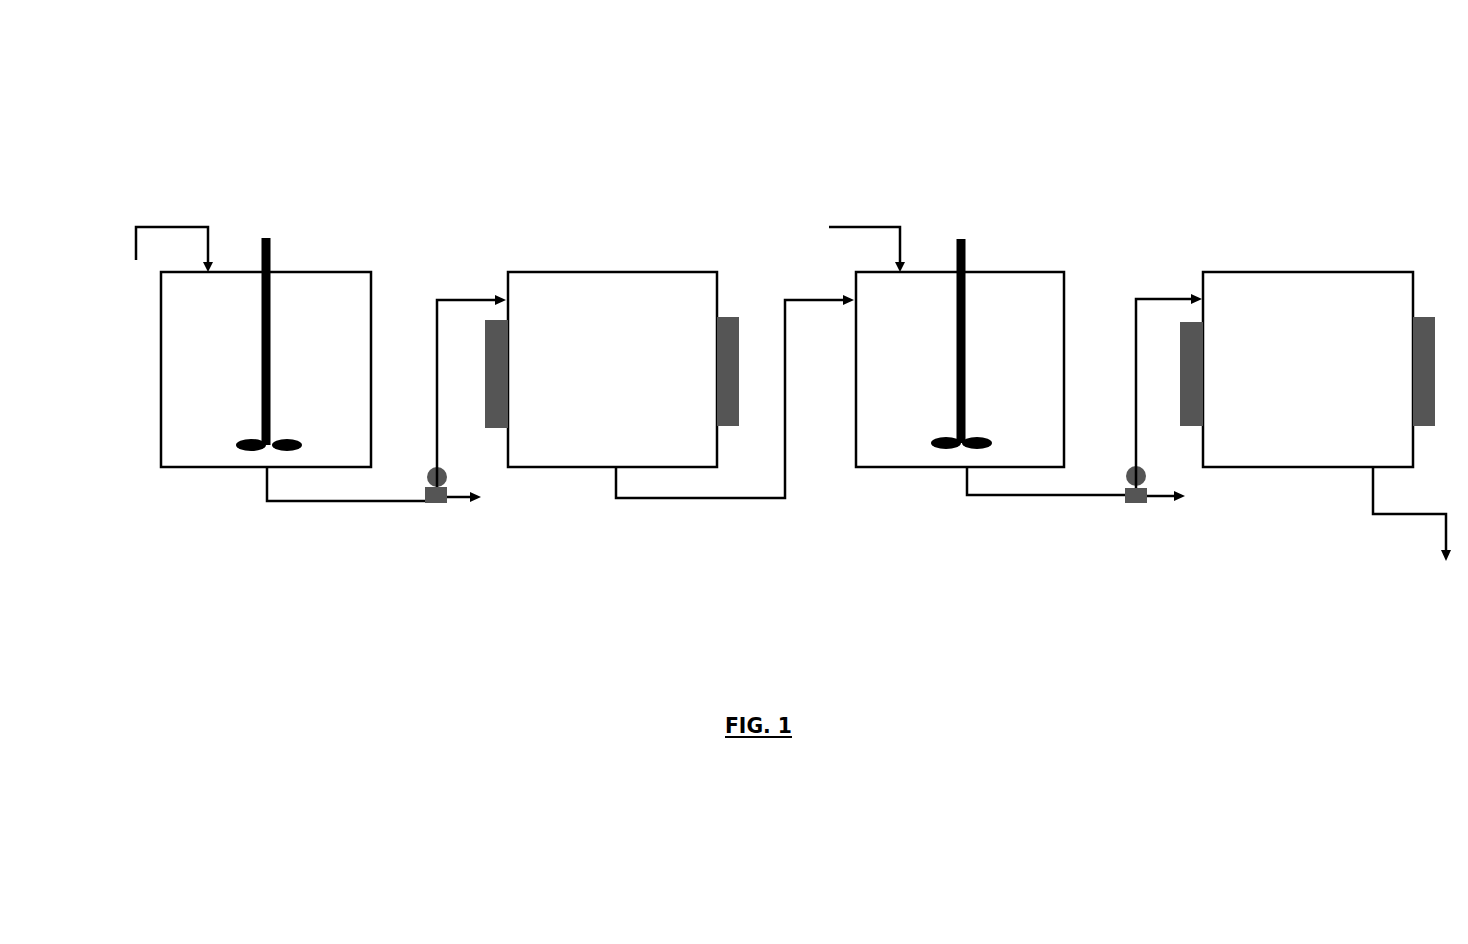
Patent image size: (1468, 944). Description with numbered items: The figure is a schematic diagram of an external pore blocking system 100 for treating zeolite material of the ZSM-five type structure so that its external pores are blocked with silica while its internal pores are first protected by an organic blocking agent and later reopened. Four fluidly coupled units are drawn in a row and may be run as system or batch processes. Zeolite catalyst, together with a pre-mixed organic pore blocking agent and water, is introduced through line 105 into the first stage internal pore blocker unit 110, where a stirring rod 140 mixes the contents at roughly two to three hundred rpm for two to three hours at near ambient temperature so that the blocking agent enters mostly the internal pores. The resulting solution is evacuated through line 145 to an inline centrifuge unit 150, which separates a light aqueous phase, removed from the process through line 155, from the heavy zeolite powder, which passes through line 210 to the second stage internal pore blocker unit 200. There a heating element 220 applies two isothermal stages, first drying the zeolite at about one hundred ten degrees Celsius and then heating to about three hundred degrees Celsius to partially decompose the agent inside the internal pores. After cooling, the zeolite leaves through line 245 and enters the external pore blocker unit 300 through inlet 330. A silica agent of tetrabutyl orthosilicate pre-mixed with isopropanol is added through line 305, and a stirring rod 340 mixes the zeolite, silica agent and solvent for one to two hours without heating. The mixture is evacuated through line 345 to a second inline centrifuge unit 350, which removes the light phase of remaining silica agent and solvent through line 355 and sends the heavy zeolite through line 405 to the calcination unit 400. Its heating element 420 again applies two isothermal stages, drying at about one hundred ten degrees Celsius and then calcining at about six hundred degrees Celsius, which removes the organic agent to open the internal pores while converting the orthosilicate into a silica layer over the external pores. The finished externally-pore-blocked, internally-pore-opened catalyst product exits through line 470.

The external pore blocking system 100 is at (296, 755).
The line 105 is at (137, 259).
The first stage internal pore blocker unit 110 is at (266, 423).
The stirring rod 140 is at (262, 233).
The line 145 is at (260, 498).
The inline centrifuge unit 150 is at (445, 506).
The line 155 is at (488, 502).
The second stage internal pore blocker unit 200 is at (601, 423).
The line 210 is at (445, 290).
The heating element 220 is at (717, 355).
The line 245 is at (752, 500).
The external pore blocker unit 300 is at (960, 421).
The line 305 is at (864, 222).
The inlet 330 is at (808, 296).
The stirring rod 340 is at (965, 234).
The line 345 is at (960, 491).
The inline centrifuge unit 350 is at (1137, 508).
The line 355 is at (1182, 503).
The calcination unit 400 is at (1296, 418).
The line 405 is at (1160, 292).
The heating element 420 is at (1413, 356).
The line 470 is at (1428, 524).